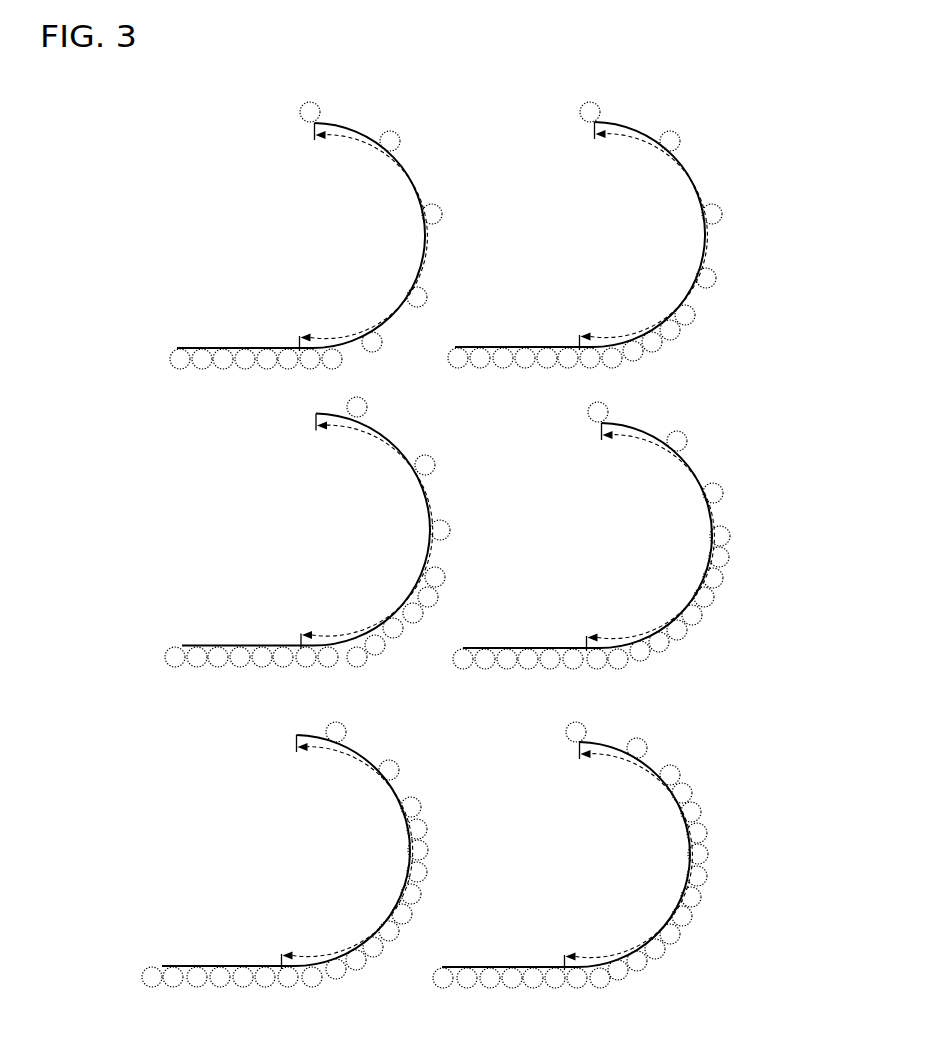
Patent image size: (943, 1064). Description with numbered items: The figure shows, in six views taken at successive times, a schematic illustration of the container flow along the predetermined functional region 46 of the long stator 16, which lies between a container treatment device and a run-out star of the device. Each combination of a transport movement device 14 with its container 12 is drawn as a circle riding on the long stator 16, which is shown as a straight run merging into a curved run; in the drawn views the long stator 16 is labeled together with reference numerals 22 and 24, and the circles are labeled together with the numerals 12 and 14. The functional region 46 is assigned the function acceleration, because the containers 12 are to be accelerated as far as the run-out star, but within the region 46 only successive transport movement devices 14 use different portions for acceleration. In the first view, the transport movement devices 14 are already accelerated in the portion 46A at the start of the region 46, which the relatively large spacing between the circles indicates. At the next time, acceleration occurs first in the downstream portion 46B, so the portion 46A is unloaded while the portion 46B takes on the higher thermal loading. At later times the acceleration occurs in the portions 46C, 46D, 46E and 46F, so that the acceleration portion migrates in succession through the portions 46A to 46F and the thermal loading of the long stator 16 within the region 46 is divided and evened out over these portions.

The container 12 is at (425, 570).
The transport movement device 14 is at (166, 358).
The long stator 16 is at (389, 546).
The shaping guide 22 is at (389, 546).
The curved guide section 24 is at (617, 967).
The predetermined functional region 46 is at (475, 545).
The portion 46A is at (330, 339).
The portion 46B is at (665, 300).
The portion 46C is at (412, 558).
The portion 46D is at (696, 517).
The portion 46E is at (385, 810).
The portion 46F is at (645, 782).